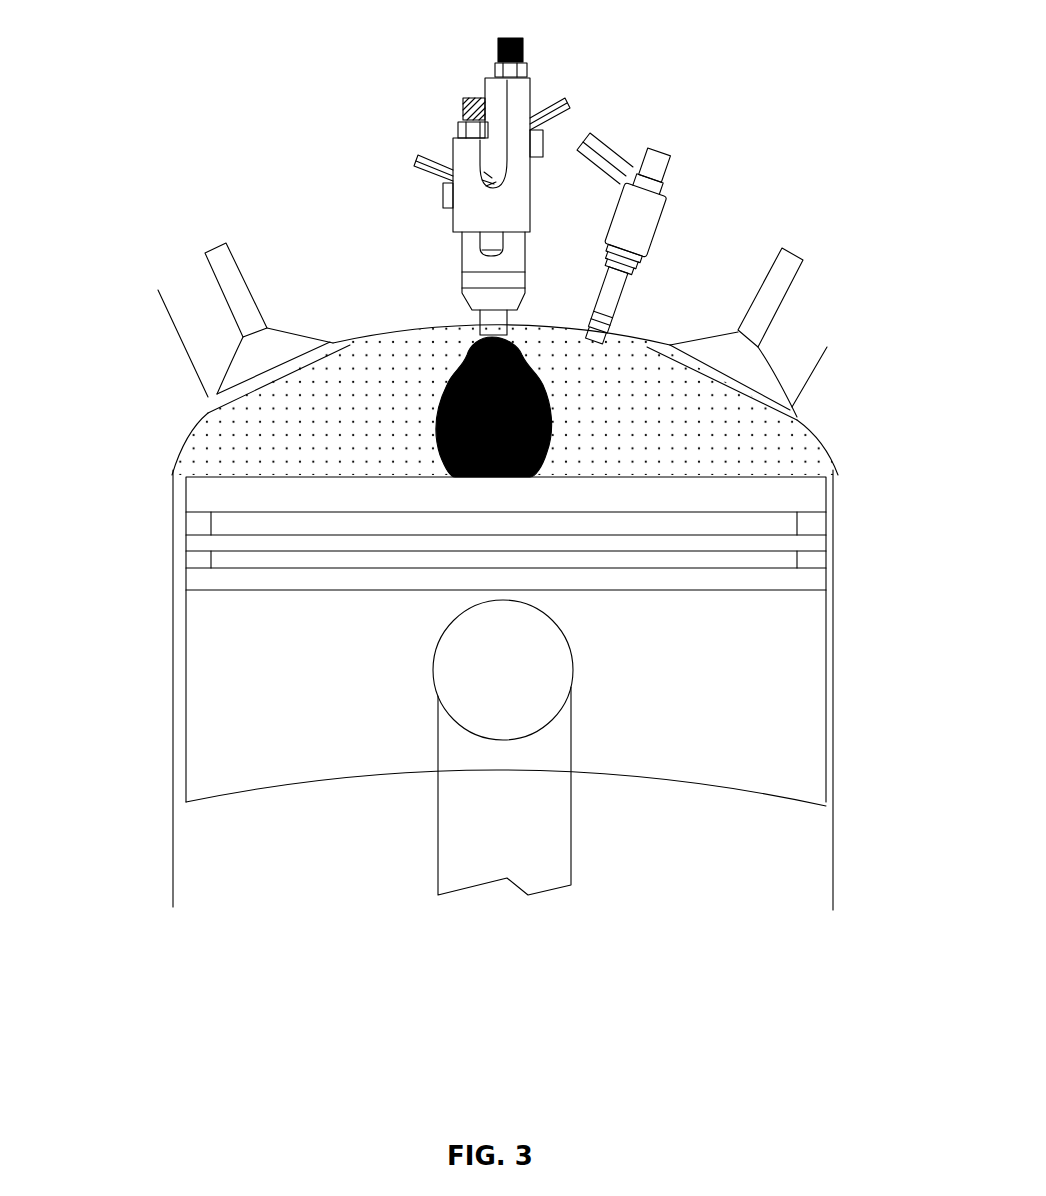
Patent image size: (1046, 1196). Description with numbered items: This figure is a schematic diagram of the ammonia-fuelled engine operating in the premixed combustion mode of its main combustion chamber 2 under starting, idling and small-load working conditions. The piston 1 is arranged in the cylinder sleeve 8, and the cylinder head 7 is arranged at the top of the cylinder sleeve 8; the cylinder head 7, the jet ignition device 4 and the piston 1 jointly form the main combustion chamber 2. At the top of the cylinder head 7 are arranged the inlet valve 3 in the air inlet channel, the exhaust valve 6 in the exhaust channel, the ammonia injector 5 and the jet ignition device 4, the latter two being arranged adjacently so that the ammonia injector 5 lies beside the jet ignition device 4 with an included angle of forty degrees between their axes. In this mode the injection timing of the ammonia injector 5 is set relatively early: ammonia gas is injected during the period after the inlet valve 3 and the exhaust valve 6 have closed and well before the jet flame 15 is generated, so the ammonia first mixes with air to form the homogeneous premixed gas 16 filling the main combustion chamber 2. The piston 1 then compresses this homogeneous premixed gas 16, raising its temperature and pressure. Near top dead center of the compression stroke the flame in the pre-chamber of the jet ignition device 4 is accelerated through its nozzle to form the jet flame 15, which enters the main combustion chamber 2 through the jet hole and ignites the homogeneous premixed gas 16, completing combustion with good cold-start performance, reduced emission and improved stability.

The piston 1 is at (262, 645).
The main combustion chamber 2 is at (243, 468).
The inlet valve 3 is at (260, 355).
The jet ignition device 4 is at (472, 167).
The ammonia injector 5 is at (667, 176).
The exhaust valve 6 is at (750, 365).
The cylinder head 7 is at (813, 438).
The cylinder sleeve 8 is at (835, 600).
The jet flame 15 is at (462, 370).
The homogeneous premixed gas 16 is at (592, 402).